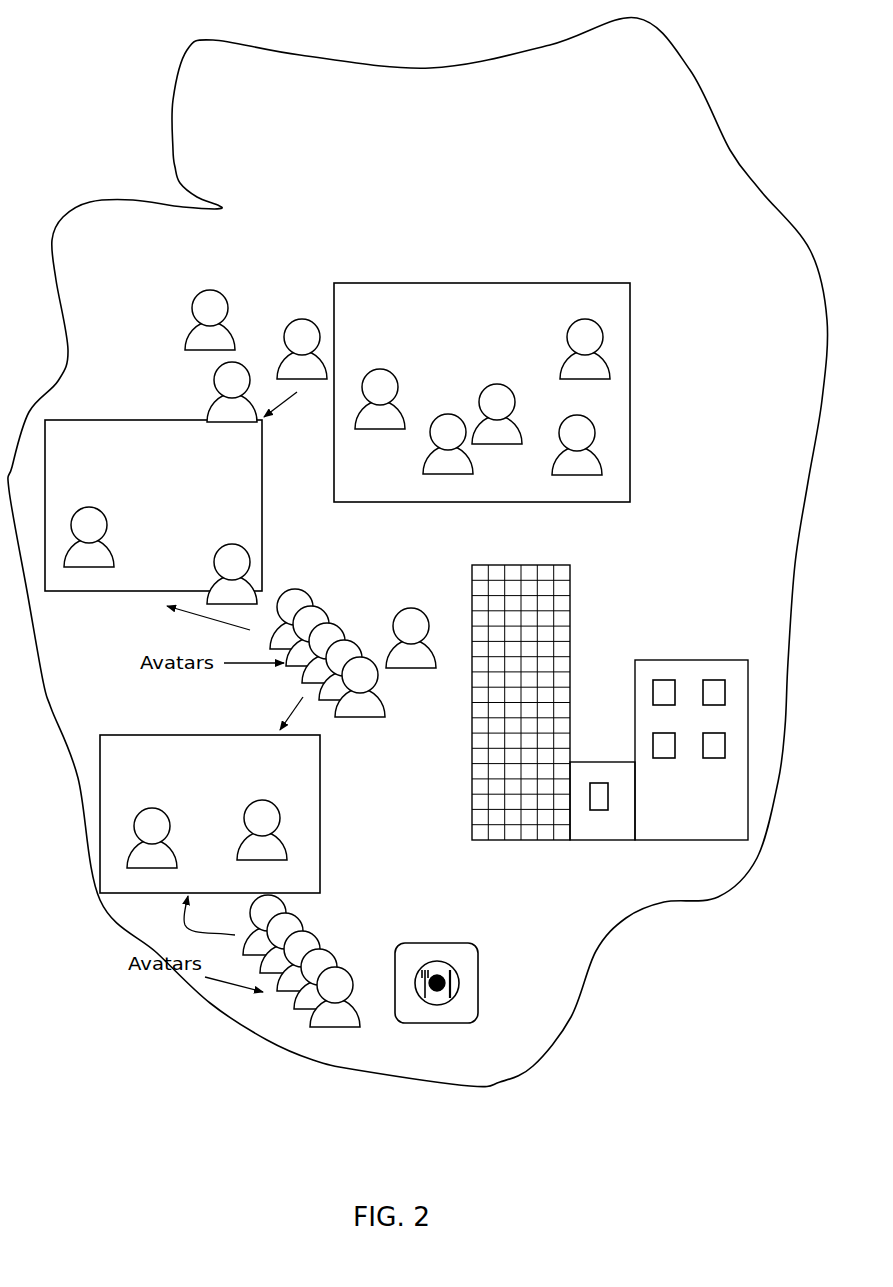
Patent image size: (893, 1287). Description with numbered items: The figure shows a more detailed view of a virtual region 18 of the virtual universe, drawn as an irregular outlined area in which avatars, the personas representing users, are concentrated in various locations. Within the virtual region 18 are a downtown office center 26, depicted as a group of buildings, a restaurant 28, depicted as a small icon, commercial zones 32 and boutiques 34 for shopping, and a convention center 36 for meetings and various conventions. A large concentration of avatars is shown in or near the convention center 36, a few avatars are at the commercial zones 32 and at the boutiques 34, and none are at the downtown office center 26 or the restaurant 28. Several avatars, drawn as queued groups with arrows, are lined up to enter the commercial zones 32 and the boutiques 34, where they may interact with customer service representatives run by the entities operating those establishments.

The virtual region 18 is at (173, 150).
The downtown office center 26 is at (663, 660).
The restaurant 28 is at (437, 943).
The commercial zones 32 is at (185, 420).
The boutiques 34 is at (191, 733).
The convention center 36 is at (450, 502).